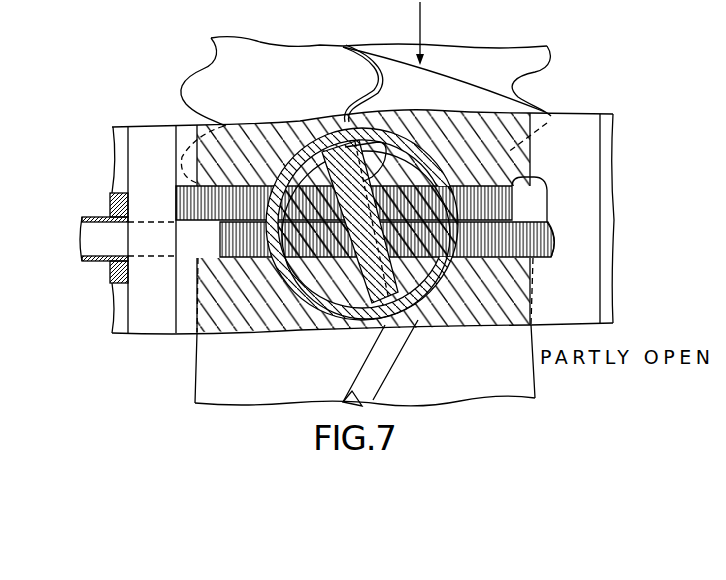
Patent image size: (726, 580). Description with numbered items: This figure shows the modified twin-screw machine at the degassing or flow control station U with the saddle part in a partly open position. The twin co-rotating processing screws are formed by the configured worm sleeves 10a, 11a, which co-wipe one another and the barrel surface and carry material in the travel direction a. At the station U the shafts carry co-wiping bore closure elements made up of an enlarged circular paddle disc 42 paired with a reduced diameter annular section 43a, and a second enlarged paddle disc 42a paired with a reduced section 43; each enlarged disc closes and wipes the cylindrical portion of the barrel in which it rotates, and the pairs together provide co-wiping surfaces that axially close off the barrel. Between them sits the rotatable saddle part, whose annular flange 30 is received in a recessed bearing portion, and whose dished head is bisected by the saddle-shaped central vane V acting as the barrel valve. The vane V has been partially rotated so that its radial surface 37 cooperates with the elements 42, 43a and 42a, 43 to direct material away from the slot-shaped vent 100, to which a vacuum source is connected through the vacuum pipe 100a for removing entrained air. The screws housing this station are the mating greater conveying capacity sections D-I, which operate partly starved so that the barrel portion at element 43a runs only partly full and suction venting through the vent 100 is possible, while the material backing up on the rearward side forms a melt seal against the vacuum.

The worm sleeve 10a is at (493, 61).
The worm sleeve 11a is at (283, 52).
The direction of strip travel a is at (421, 34).
The degassing station U is at (250, 213).
The vane V is at (372, 180).
The paddle disc 42 is at (177, 185).
The paddle disc 42a is at (555, 239).
The reduced paddle disc portion 43 is at (227, 238).
The reduced paddle disc portion 43a is at (538, 200).
The vent 100 is at (128, 194).
The vacuum pipe 100a is at (95, 262).
The radial surface of vane 37 is at (357, 252).
The annular flange 30 is at (328, 312).
The greater conveying capacity sections D-I is at (447, 378).